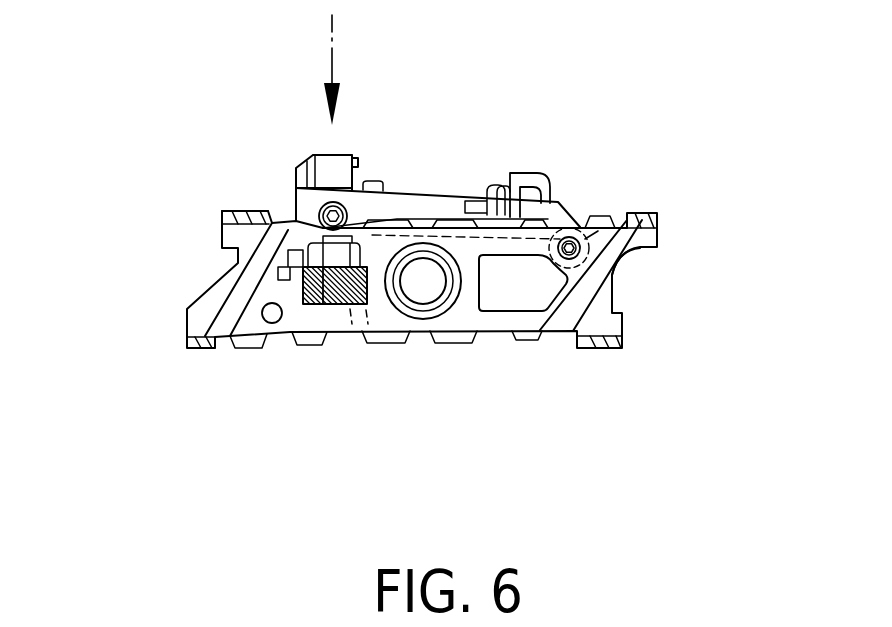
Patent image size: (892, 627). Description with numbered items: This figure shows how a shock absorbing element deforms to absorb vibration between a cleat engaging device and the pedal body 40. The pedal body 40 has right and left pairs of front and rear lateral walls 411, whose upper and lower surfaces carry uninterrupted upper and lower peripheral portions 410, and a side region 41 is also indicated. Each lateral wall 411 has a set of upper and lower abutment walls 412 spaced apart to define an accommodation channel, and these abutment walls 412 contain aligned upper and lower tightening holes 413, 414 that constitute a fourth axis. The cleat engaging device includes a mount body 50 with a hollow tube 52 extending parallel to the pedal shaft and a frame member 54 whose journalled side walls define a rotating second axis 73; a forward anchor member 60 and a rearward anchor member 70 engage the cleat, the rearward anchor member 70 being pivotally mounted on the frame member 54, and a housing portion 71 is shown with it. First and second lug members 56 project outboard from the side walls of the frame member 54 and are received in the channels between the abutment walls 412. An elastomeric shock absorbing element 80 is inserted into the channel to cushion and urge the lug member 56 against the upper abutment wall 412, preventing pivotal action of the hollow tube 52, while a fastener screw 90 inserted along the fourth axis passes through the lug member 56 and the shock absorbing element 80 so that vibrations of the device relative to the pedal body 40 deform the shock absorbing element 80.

The pedal body 40 is at (662, 223).
The side wall of pedal body 41 is at (623, 268).
The upper and lower peripheral portions 410 is at (221, 217).
The front and rear lateral walls 411 is at (393, 318).
The upper and lower abutment walls 412 is at (218, 348).
The upper tightening hole 413 is at (377, 318).
The lower tightening hole 414 is at (345, 218).
The mount body 50 is at (447, 193).
The hollow tube 52 is at (600, 230).
The frame member 54 is at (307, 204).
The lug members 56 is at (310, 237).
The forward anchor member 60 is at (525, 170).
The rearward anchor member 70 is at (307, 150).
The lever housing 71 is at (303, 167).
The rotating second axis 73 is at (357, 193).
The elastomeric shock absorbing elements 80 is at (288, 300).
The fastener screws 90 is at (312, 323).